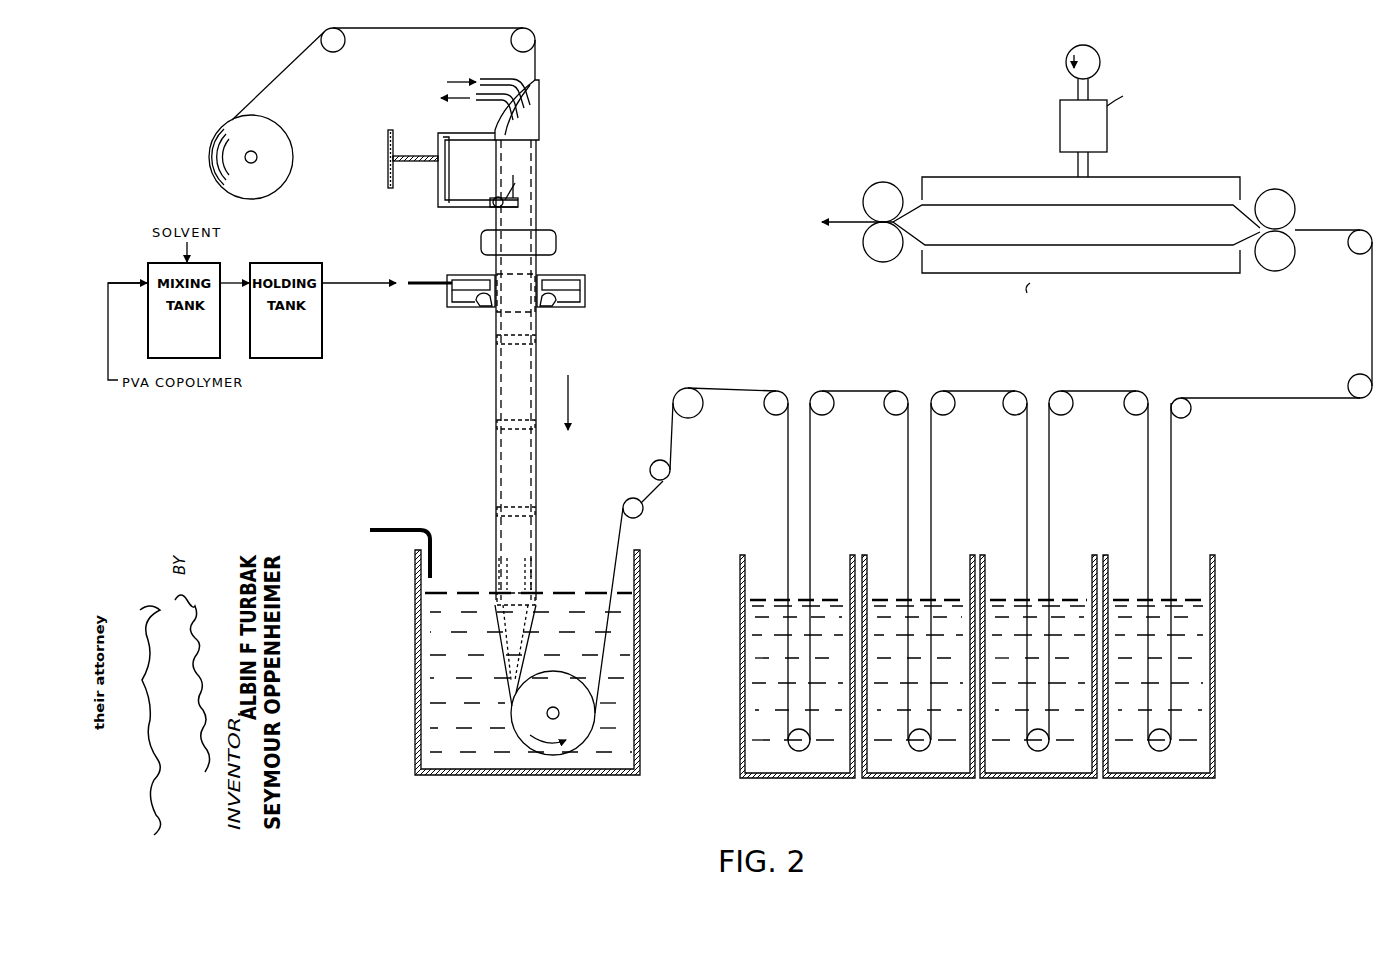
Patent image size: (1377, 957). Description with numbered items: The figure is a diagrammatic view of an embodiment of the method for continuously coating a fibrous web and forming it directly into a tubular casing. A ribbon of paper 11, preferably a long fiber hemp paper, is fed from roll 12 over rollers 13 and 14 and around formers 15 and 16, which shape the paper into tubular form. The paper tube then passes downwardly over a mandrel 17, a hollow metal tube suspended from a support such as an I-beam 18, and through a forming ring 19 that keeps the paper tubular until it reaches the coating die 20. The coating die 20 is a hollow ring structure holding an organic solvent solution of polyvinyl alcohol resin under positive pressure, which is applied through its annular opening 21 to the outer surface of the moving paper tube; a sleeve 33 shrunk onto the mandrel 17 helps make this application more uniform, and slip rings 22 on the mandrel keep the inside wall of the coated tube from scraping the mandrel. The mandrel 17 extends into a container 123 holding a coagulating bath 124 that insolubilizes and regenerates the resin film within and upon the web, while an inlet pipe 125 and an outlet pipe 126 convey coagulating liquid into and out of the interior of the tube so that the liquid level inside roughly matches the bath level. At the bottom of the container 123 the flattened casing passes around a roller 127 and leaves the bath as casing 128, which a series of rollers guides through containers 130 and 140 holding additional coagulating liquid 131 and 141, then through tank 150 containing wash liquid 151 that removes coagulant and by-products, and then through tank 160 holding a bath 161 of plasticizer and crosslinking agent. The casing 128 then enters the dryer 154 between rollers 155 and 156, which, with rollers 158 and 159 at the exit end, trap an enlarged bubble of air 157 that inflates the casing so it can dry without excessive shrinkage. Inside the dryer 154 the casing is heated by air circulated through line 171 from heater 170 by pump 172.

The ribbon of paper 11 is at (270, 86).
The roll 12 is at (290, 180).
The roller 13 is at (337, 53).
The roller 14 is at (510, 43).
The former 15 is at (539, 125).
The former 16 is at (497, 206).
The mandrel 17 is at (528, 212).
The I-beam 18 is at (390, 188).
The forming ring 19 is at (555, 233).
The coating die 20 is at (585, 292).
The annular opening 21 is at (486, 307).
The slip rings 22 is at (497, 341).
The sleeve 33 is at (527, 281).
The container 123 is at (415, 628).
The coagulating bath 124 is at (430, 668).
The inlet pipe 125 is at (481, 77).
The outlet pipe 126 is at (478, 108).
The roller 127 is at (580, 740).
The casing 128 is at (613, 580).
The container 130 is at (776, 778).
The coagulating liquid 131 is at (770, 604).
The container 140 is at (898, 778).
The coagulating liquid 141 is at (890, 604).
The tank 150 is at (1018, 778).
The wash liquid 151 is at (1010, 604).
The dryer 154 is at (1138, 273).
The roller 155 is at (1277, 271).
The roller 156 is at (1290, 200).
The trapped bubble of air 157 is at (1033, 205).
The roller 158 is at (890, 258).
The roller 159 is at (878, 190).
The tank 160 is at (1140, 778).
The bath 161 is at (1134, 604).
The heater 170 is at (1107, 140).
The line 171 is at (1089, 164).
The pump 172 is at (1093, 48).